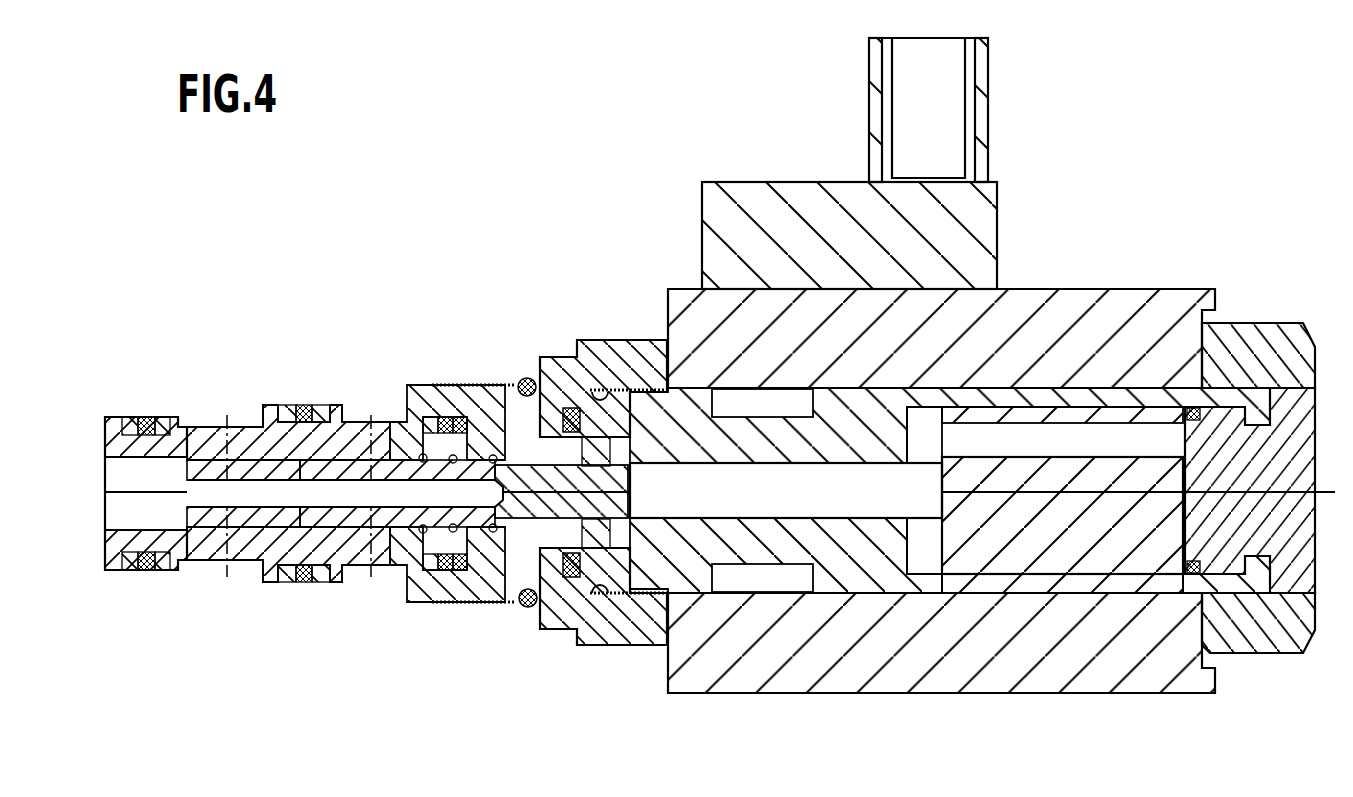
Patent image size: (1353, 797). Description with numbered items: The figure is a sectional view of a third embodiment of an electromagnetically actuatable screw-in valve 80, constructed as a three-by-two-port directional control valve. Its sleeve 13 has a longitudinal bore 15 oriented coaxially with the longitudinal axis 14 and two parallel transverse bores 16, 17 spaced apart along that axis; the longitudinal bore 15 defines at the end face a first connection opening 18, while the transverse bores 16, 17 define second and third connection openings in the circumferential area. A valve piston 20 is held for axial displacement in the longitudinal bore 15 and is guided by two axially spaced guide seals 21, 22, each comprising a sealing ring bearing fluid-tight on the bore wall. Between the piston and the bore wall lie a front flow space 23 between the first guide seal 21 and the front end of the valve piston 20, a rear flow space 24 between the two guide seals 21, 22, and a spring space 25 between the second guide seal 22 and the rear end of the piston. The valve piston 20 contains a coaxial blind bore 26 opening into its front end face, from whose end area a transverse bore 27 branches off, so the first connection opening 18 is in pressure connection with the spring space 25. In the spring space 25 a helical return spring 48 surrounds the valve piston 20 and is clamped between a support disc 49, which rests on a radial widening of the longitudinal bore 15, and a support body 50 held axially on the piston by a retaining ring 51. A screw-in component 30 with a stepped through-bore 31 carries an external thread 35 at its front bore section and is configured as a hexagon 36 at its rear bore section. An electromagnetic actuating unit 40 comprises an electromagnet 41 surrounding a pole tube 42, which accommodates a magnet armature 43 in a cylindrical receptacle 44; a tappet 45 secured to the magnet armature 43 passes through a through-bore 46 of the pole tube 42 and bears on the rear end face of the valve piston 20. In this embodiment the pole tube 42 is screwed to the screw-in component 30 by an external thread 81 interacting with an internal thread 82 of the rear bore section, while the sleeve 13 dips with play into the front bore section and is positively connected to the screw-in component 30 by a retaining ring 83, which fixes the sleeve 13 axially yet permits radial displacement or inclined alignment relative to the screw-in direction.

The sleeve 13 is at (333, 397).
The longitudinal axis 14 is at (105, 494).
The longitudinal bore 15 is at (105, 538).
The transverse bore 16 is at (215, 568).
The transverse bore 17 is at (353, 568).
The first connection opening 18 is at (105, 461).
The valve piston 20 is at (253, 568).
The first guide seal 21 is at (227, 458).
The second guide seal 22 is at (398, 455).
The front flow space 23 is at (185, 563).
The rear flow space 24 is at (377, 565).
The spring space 25 is at (460, 571).
The blind bore 26 is at (188, 486).
The transverse bore 27 is at (487, 390).
The screw-in component 30 is at (574, 339).
The stepped through-bore 31 is at (400, 572).
The external thread 35 is at (438, 395).
The hexagon 36 is at (655, 388).
The electromagnetic actuating unit 40 is at (1098, 283).
The electromagnet 41 is at (1177, 305).
The pole tube 42 is at (996, 386).
The magnet armature 43 is at (1097, 530).
The cylindrical receptacle 44 is at (970, 577).
The tappet 45 is at (845, 508).
The through-bore 46 is at (750, 508).
The helical return spring 48 is at (522, 400).
The support disc 49 is at (458, 400).
The support body 50 is at (577, 640).
The retaining ring 51 is at (660, 473).
The screw-in valve 80 is at (1030, 220).
The external thread 81 is at (635, 392).
The internal thread 82 is at (602, 385).
The retaining ring 83 is at (519, 604).